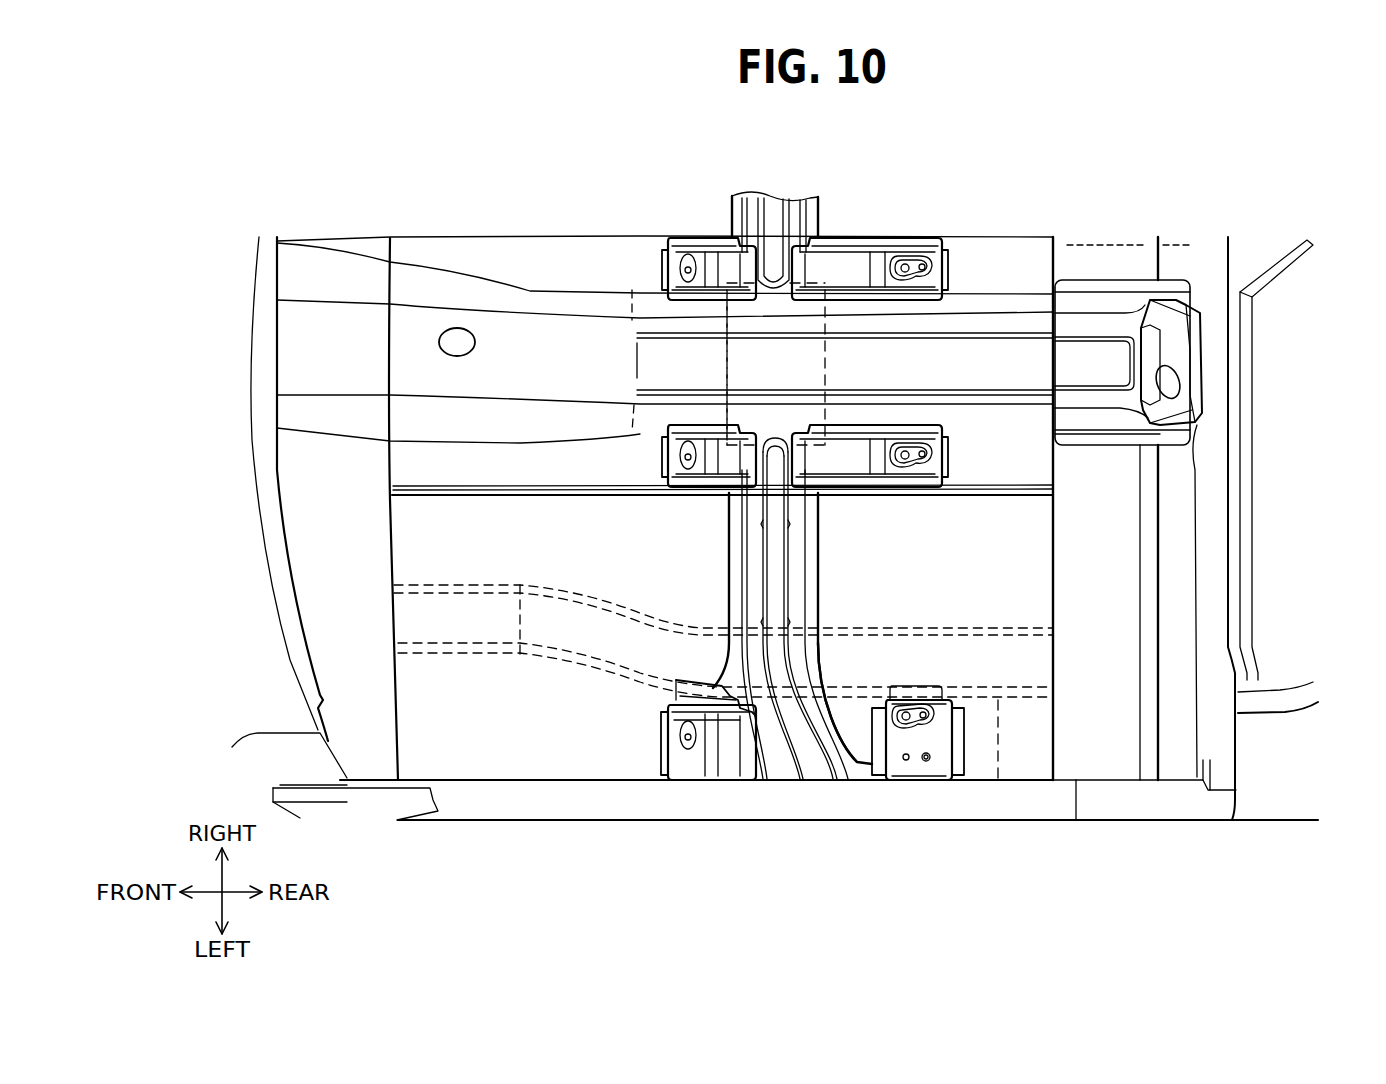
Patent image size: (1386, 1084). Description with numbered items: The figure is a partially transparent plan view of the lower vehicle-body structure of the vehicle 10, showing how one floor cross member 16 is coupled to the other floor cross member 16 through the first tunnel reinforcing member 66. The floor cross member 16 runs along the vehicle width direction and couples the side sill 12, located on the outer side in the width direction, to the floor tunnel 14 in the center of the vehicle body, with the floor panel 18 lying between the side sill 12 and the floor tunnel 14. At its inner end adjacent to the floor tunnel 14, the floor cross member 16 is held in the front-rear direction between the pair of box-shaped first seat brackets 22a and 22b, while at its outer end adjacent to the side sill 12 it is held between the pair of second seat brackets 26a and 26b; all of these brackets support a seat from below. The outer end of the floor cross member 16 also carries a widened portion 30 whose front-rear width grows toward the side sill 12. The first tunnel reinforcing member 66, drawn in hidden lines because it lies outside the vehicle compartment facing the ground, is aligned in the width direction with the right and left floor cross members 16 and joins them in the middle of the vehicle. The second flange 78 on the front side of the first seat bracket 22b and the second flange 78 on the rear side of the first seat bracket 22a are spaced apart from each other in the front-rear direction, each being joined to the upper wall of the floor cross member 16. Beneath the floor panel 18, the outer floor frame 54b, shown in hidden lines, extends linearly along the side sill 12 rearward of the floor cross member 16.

The vehicle 10 is at (1236, 153).
The side sill 12 is at (543, 836).
The floor tunnel 14 is at (992, 282).
The floor cross member 16 is at (830, 212).
The floor panel 18 is at (1025, 575).
The first seat bracket 22a is at (693, 218).
The first seat bracket 22b is at (912, 222).
The second seat bracket 26a is at (712, 792).
The second seat bracket 26b is at (912, 792).
The widened portion 30 is at (848, 720).
The outer floor frame 54b is at (998, 700).
The first tunnel reinforcing member 66 is at (720, 357).
The second flange 78 is at (765, 457).